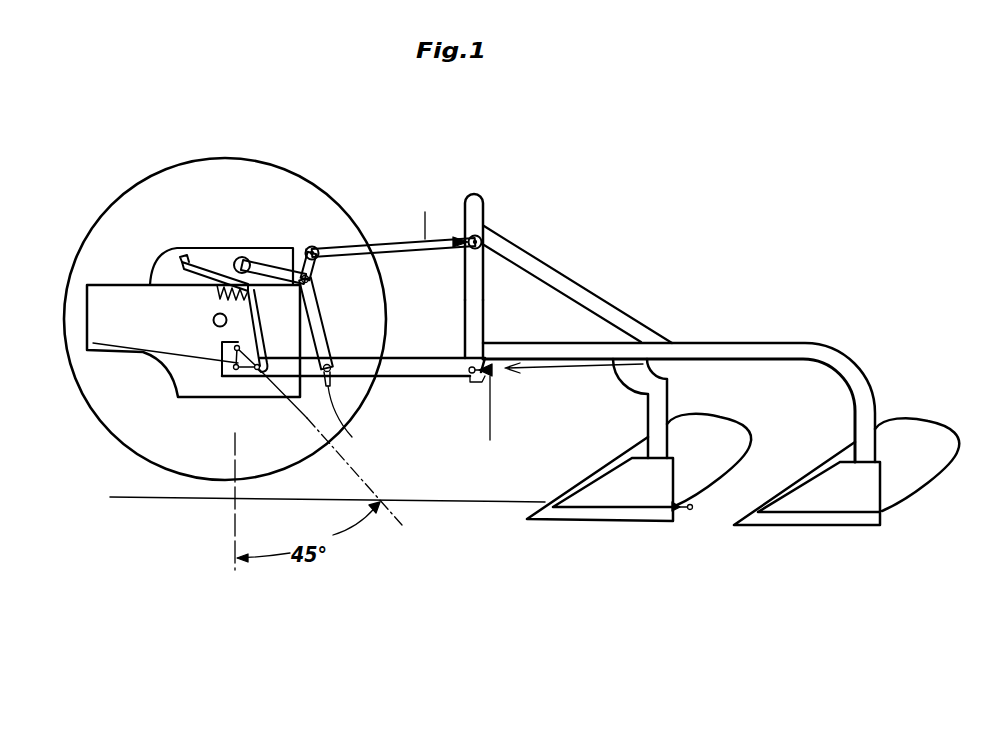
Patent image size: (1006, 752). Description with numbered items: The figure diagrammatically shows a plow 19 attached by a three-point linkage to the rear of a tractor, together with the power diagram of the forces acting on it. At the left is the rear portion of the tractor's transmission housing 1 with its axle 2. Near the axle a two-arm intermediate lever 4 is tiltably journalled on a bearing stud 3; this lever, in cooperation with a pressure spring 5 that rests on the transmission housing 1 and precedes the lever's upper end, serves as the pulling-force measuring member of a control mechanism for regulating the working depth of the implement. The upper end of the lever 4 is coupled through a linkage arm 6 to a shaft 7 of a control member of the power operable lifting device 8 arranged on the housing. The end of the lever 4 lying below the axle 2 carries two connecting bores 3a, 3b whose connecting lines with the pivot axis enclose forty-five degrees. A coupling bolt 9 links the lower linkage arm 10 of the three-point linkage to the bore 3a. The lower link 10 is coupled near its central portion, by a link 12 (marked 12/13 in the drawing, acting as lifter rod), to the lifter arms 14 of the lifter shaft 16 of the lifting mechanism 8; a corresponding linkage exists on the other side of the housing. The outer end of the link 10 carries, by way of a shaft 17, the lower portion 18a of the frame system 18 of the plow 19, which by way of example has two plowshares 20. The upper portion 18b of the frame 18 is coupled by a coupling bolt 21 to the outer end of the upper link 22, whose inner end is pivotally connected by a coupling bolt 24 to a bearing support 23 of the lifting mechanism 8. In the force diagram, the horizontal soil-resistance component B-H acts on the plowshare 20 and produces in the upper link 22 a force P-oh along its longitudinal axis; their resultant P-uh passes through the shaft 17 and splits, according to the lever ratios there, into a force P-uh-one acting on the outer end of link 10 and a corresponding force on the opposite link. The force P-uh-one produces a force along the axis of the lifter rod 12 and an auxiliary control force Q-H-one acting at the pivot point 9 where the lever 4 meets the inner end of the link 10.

The transmission housing 1 is at (93, 313).
The axle 2 is at (212, 320).
The bearing stud 3 is at (240, 399).
The connecting bore 3a is at (262, 372).
The connecting bore 3b is at (235, 370).
The two-arm intermediate lever 4 is at (252, 342).
The pressure spring 5 is at (223, 282).
The linkage arm 6 is at (203, 266).
The shaft 7 is at (184, 257).
The power operable lifting device 8 is at (167, 268).
The coupling bolt 9 is at (255, 372).
The lower linkage arm 10 is at (410, 368).
The lifter rod 12 is at (340, 332).
The rod 13 is at (321, 323).
The lifter arms 14 is at (265, 272).
The lifter shaft 16 is at (245, 258).
The shaft 17 is at (473, 380).
The frame system 18 is at (540, 268).
The lower portion of frame 18a is at (477, 325).
The upper portion of frame 18b is at (477, 203).
The plow 19 is at (643, 378).
The plowshares 20 is at (733, 437).
The coupling bolt 21 is at (485, 227).
The upper link 22 is at (450, 238).
The bearing support 23 is at (311, 247).
The coupling bolt 24 is at (315, 250).